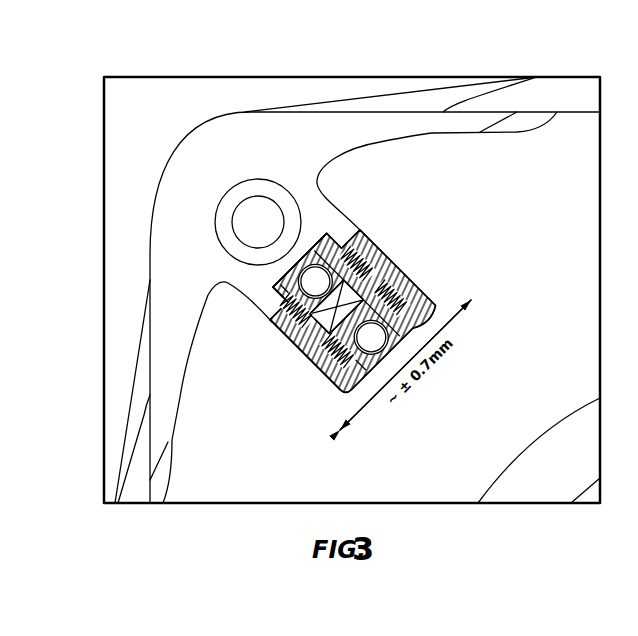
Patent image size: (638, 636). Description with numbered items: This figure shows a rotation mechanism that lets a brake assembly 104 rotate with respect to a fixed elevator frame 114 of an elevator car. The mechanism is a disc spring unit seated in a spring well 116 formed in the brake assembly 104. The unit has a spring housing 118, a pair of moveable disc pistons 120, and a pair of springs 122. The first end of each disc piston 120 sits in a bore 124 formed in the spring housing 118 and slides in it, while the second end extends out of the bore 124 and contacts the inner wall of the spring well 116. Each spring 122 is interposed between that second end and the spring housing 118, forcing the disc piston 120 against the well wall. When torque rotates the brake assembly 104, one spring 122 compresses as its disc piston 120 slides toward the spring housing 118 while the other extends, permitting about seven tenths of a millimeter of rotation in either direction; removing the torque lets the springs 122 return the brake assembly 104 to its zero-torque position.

The brake assembly 104 is at (197, 320).
The elevator frame 114 is at (194, 160).
The spring well 116 is at (341, 230).
The spring housing 118 is at (291, 314).
The disc piston 120 is at (290, 350).
The spring 122 is at (281, 290).
The bore 124 is at (341, 306).